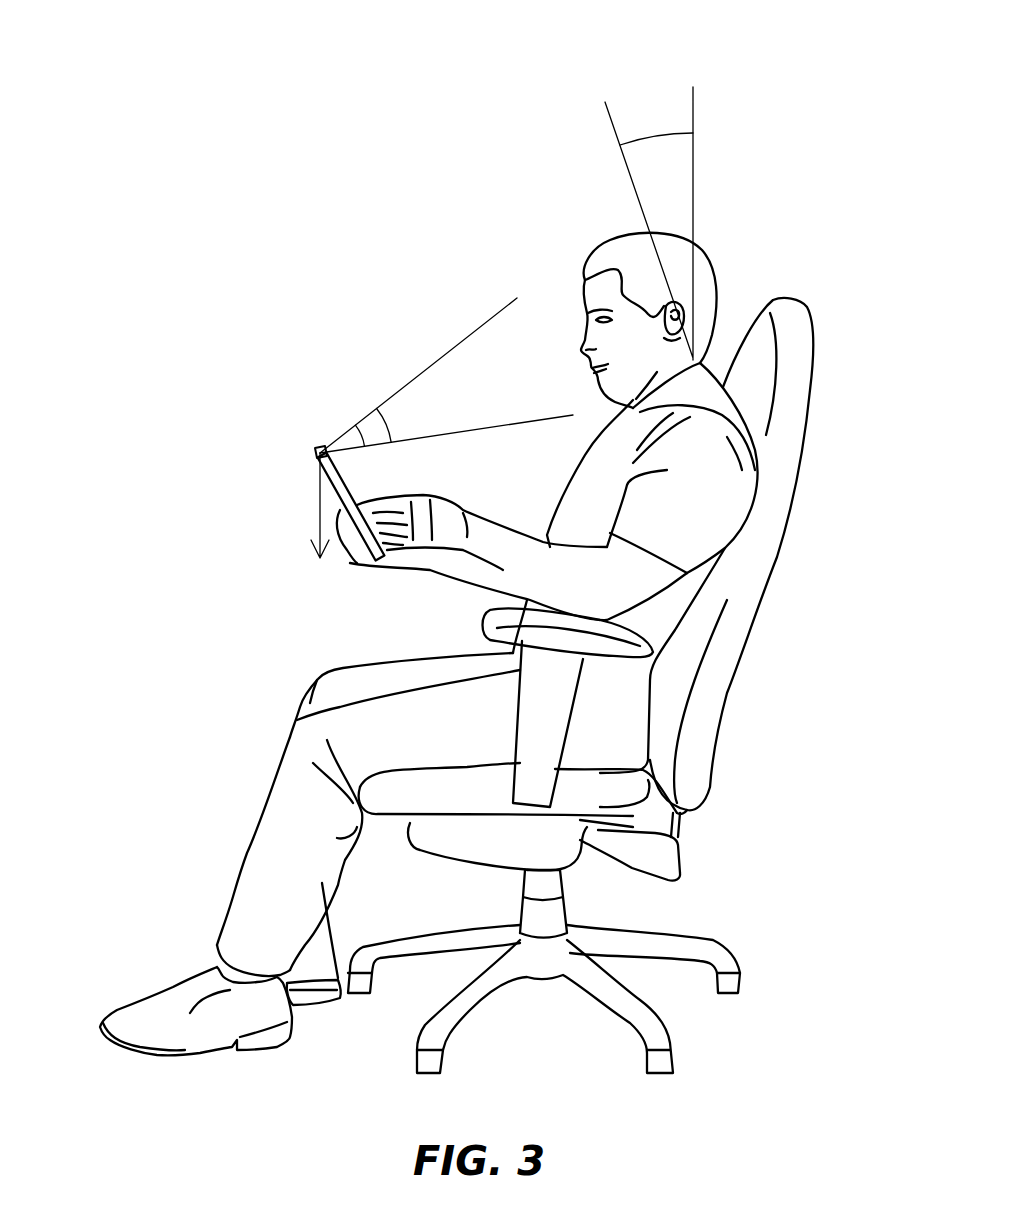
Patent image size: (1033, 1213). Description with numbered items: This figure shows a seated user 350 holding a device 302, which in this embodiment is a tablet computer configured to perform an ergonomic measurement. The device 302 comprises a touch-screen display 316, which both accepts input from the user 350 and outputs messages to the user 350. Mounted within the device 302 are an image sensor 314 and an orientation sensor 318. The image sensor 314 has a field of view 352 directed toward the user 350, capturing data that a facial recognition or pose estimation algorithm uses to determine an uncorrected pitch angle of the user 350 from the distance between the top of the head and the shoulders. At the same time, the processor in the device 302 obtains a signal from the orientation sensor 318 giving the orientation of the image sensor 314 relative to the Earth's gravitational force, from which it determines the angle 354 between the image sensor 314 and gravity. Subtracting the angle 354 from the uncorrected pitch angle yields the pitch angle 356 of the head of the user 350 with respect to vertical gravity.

The device 302 is at (318, 450).
The image sensor 314 is at (356, 426).
The display 316 is at (353, 490).
The orientation sensor 318 is at (314, 458).
The user 350 is at (318, 744).
The field of view 352 is at (385, 422).
The angle 354 is at (322, 512).
The pitch angle 356 is at (653, 136).